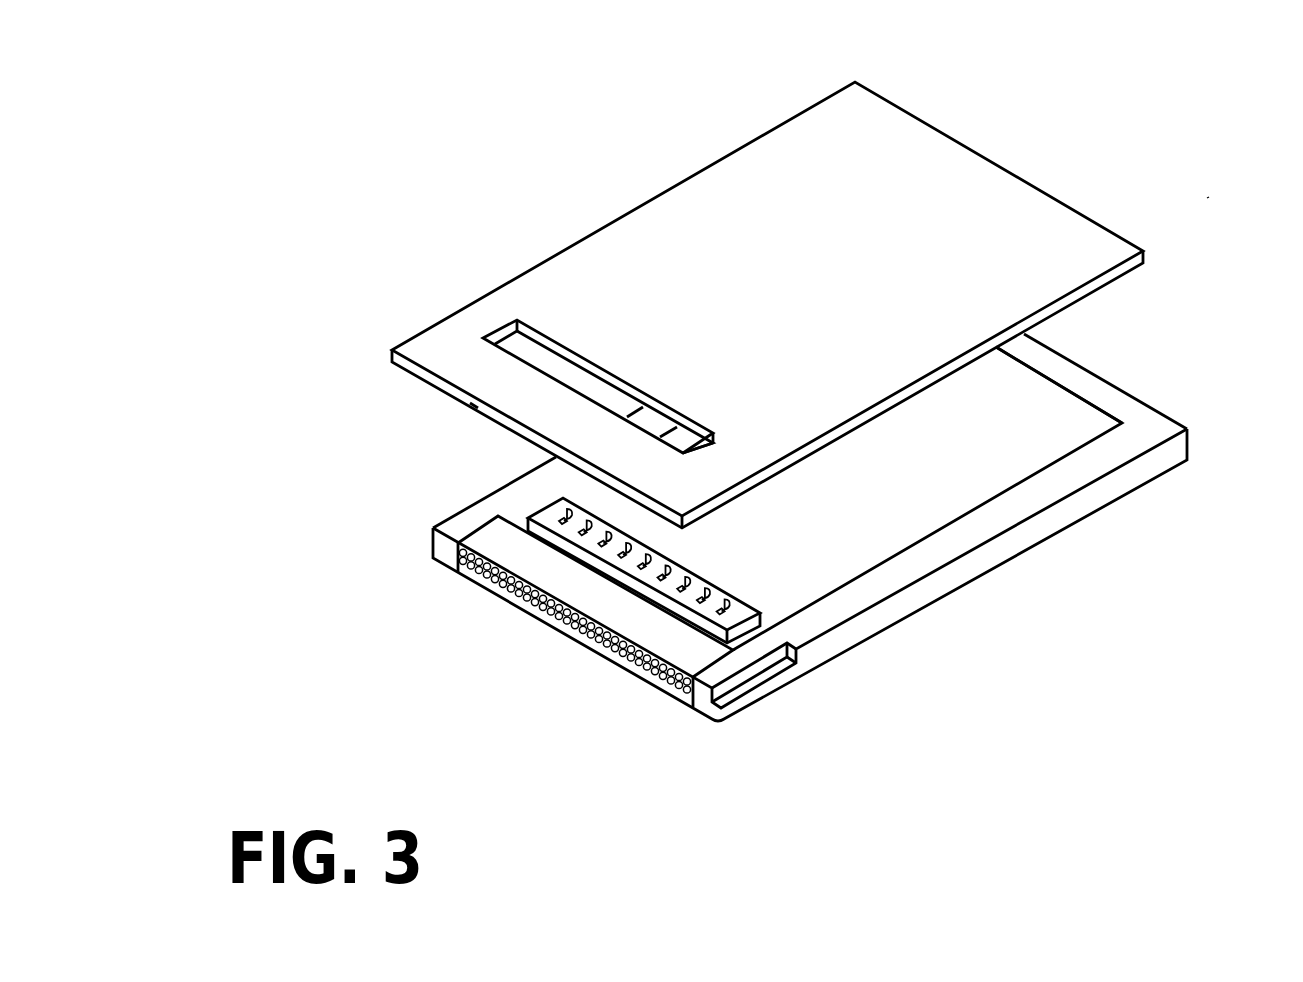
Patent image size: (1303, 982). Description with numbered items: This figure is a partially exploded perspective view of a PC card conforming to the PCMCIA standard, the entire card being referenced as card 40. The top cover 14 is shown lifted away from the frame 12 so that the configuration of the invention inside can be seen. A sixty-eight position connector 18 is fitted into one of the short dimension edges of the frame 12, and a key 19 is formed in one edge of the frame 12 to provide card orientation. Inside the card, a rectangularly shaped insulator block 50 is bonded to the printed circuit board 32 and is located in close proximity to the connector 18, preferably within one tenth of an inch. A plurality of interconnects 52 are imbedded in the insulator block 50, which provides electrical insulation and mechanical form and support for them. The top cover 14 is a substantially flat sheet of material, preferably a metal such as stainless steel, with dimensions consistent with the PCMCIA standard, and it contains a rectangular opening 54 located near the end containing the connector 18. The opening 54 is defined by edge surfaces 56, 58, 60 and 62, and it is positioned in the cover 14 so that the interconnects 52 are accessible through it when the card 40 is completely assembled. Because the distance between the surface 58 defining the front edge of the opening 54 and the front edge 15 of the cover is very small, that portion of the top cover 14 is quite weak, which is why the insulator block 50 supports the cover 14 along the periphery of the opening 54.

The frame 12 is at (970, 573).
The top cover 14 is at (928, 122).
The front edge 15 is at (472, 403).
The 68 position connector 18 is at (533, 613).
The key 19 is at (762, 680).
The printed circuit board 32 is at (1067, 412).
The card 40 is at (1203, 201).
The insulator block 50 is at (527, 520).
The interconnects 52 is at (695, 562).
The rectangular opening 54 is at (650, 424).
The edge surface 56 is at (643, 402).
The edge surface 58 is at (577, 383).
The edge surface 60 is at (688, 442).
The edge surface 62 is at (503, 333).